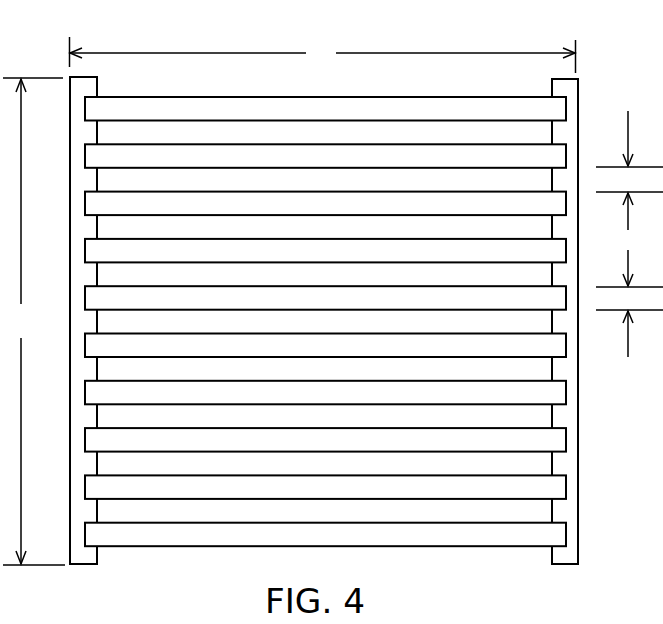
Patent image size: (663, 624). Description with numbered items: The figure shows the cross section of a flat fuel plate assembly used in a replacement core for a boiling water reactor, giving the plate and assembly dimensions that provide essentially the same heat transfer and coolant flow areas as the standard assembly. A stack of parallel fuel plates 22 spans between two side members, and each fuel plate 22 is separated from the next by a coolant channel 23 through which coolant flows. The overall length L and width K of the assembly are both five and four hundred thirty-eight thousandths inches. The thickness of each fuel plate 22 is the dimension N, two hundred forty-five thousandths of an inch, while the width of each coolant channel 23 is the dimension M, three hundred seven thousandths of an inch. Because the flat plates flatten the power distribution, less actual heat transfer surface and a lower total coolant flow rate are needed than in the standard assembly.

The fuel plate 22 is at (508, 106).
The coolant channel 23 is at (455, 129).
The width of the assembly K is at (323, 55).
The length of the assembly L is at (34, 321).
The width of coolant channel M is at (629, 159).
The thickness of the fuel plate N is at (629, 319).